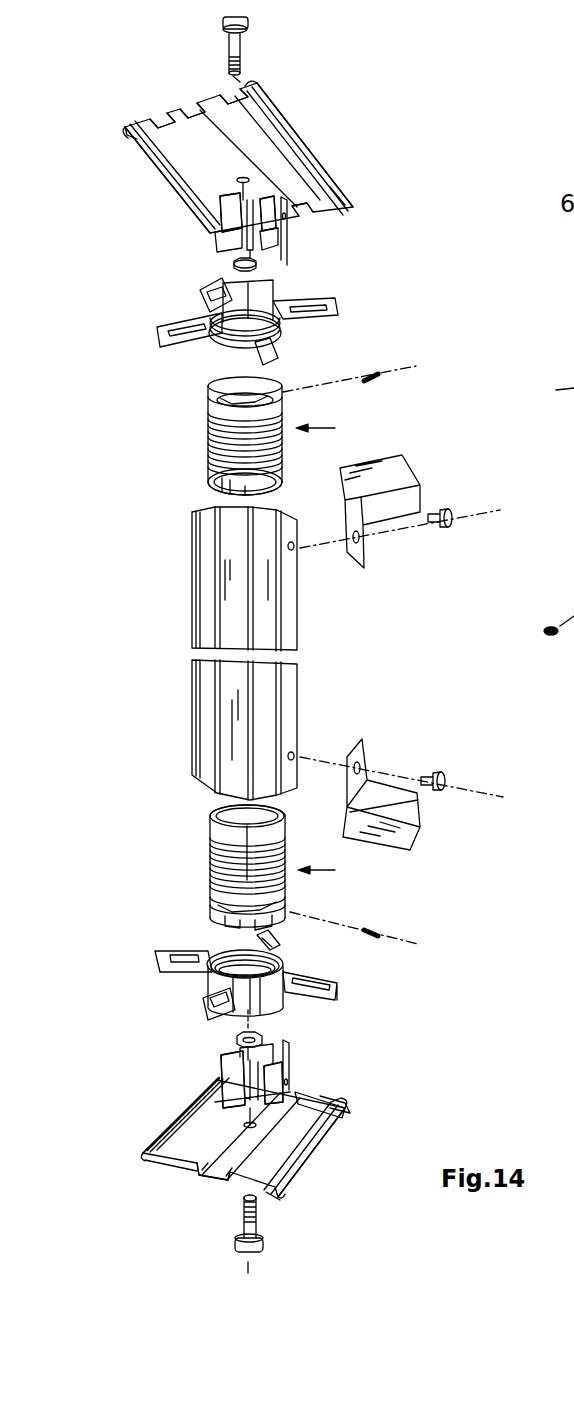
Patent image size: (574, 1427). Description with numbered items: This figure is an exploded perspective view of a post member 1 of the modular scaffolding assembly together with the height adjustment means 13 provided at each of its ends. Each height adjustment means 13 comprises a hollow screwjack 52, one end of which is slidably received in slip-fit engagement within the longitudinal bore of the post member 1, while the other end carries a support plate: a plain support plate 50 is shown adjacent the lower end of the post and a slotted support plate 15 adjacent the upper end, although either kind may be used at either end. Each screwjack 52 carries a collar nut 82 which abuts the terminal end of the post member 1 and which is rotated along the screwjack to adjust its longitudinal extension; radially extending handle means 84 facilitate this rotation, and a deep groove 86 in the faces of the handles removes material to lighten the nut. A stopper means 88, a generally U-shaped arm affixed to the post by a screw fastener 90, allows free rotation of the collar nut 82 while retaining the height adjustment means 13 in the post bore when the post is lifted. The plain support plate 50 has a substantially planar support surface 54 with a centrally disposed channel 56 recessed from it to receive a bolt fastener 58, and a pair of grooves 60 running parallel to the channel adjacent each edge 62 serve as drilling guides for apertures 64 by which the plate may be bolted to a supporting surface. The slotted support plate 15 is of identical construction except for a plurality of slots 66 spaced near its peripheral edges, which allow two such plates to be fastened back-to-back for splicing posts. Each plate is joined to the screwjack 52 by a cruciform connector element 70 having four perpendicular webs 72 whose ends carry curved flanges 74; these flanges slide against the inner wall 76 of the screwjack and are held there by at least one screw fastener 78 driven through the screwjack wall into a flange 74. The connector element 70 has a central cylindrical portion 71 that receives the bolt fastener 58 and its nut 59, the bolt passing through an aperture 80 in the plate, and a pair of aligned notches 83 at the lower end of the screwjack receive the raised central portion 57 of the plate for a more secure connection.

The post member 1 is at (208, 682).
The height adjustment means 13 is at (335, 428).
The slotted support plate 15 is at (272, 150).
The plain support plate 50 is at (322, 1090).
The hollow screwjack 52 is at (207, 457).
The support surface 54 is at (215, 1198).
The centrally disposed channel 56 is at (181, 101).
The raised central portion 57 is at (207, 140).
The bolt fastener 58 is at (243, 50).
The nut 59 is at (238, 268).
The grooves 60 is at (140, 152).
The edge 62 is at (150, 1155).
The apertures 64 is at (153, 1142).
The slots 66 is at (238, 96).
The cruciform connector element 70 is at (300, 240).
The central cylindrical portion 71 is at (280, 1052).
The webs 72 is at (235, 262).
The curved flanges 74 is at (233, 227).
The inner wall 76 is at (227, 497).
The screw fastener 78 is at (380, 378).
The aperture 80 is at (322, 216).
The collar nut 82 is at (205, 298).
The aligned notches 83 is at (207, 397).
The handle means 84 is at (330, 312).
The deep groove 86 is at (308, 323).
The stopper means 88 is at (418, 487).
The screw fastener 90 is at (456, 518).